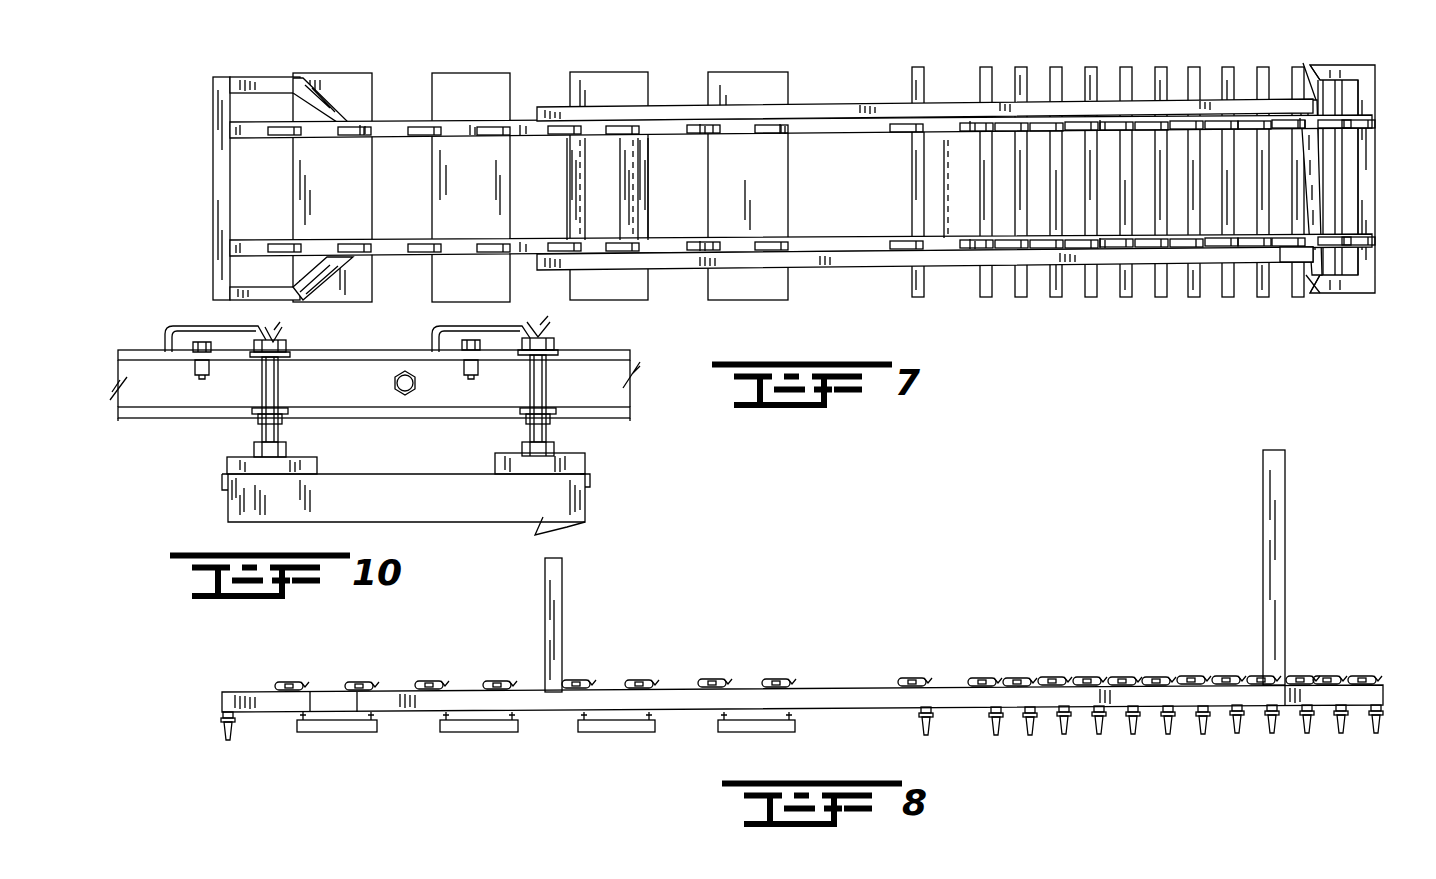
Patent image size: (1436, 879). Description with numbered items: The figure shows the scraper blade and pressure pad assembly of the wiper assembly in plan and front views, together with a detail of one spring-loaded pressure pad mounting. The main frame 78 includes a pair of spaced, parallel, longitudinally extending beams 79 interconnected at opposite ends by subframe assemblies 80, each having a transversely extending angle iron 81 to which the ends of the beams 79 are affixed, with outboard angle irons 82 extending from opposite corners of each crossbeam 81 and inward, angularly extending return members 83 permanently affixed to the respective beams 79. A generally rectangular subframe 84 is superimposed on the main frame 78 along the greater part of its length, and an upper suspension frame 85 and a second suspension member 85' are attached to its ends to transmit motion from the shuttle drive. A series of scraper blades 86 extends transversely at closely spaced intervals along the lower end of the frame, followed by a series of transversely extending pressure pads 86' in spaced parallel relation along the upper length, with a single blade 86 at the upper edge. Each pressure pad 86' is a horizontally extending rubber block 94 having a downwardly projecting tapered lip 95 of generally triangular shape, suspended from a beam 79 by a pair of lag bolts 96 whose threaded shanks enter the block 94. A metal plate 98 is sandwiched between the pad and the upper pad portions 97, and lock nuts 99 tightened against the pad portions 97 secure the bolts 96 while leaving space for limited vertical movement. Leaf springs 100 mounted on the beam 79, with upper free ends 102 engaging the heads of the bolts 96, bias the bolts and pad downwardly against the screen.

In FIG. 7, the main frame 78 is at (764, 188).
In FIG. 7, the longitudinally extending beams 79 is at (838, 122).
In FIG. 10, the longitudinally extending beams 79 is at (147, 352).
In FIG. 7, the subframe assemblies 80 is at (213, 297).
In FIG. 7, the transversely extending angle iron 81 is at (222, 172).
In FIG. 7, the outboard angle irons 82 is at (246, 77).
In FIG. 7, the return members 83 is at (325, 290).
In FIG. 7, the subframe 84 is at (672, 105).
In FIG. 8, the subframe 84 is at (850, 706).
In FIG. 8, the upper suspension frame 85 is at (520, 625).
In FIG. 8, the suspension member 85' is at (1240, 567).
In FIG. 7, the scraper blades 86 is at (1108, 199).
In FIG. 8, the scraper blades 86 is at (802, 739).
In FIG. 7, the pressure pads 86' is at (541, 188).
In FIG. 10, the pressure pads 86' is at (199, 496).
In FIG. 8, the pressure pads 86' is at (546, 740).
In FIG. 10, the block 94 is at (580, 497).
In FIG. 10, the tapered lip 95 is at (568, 524).
In FIG. 10, the lag bolts 96 is at (262, 433).
In FIG. 10, the upper pad portions 97 is at (588, 460).
In FIG. 10, the metal plate 98 is at (245, 463).
In FIG. 10, the lock nuts 99 is at (285, 447).
In FIG. 7, the leaf springs 100 is at (770, 133).
In FIG. 10, the leaf springs 100 is at (200, 326).
In FIG. 10, the upper free ends 102 is at (283, 335).